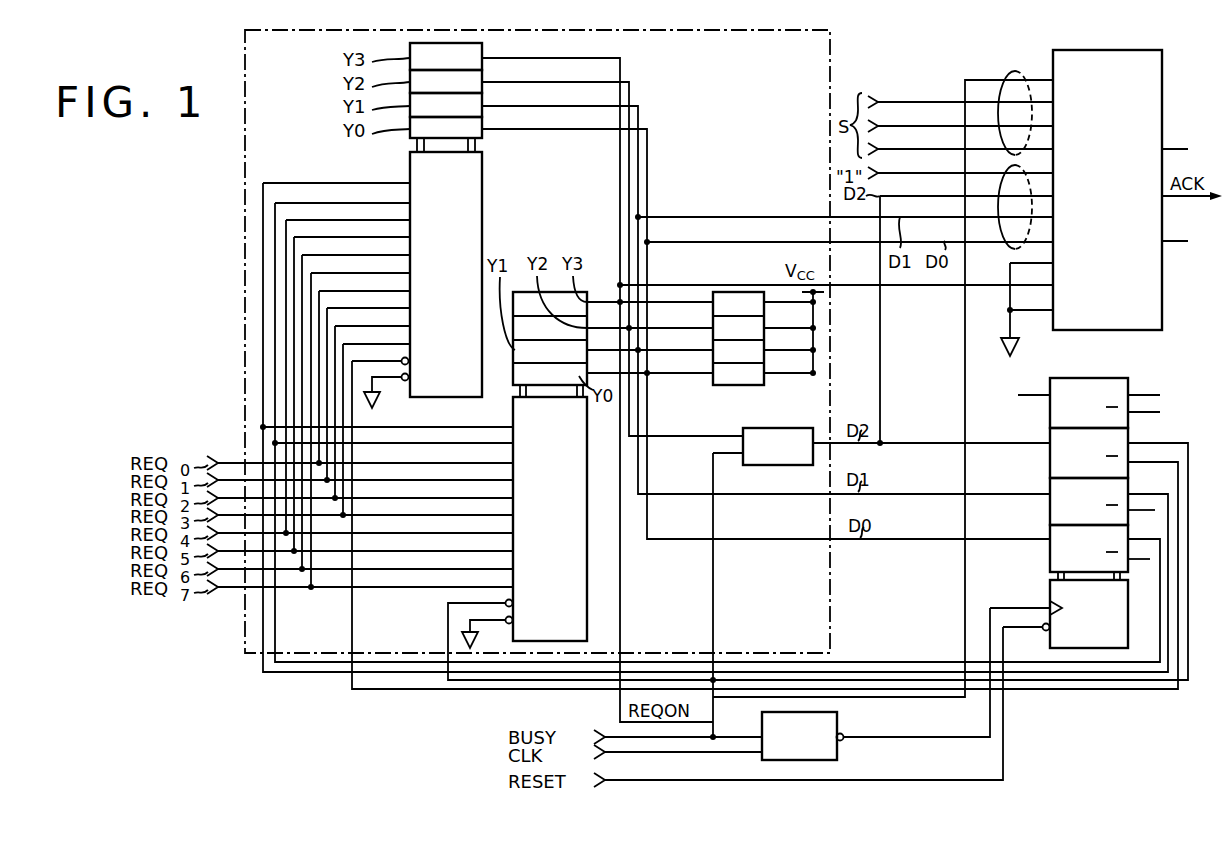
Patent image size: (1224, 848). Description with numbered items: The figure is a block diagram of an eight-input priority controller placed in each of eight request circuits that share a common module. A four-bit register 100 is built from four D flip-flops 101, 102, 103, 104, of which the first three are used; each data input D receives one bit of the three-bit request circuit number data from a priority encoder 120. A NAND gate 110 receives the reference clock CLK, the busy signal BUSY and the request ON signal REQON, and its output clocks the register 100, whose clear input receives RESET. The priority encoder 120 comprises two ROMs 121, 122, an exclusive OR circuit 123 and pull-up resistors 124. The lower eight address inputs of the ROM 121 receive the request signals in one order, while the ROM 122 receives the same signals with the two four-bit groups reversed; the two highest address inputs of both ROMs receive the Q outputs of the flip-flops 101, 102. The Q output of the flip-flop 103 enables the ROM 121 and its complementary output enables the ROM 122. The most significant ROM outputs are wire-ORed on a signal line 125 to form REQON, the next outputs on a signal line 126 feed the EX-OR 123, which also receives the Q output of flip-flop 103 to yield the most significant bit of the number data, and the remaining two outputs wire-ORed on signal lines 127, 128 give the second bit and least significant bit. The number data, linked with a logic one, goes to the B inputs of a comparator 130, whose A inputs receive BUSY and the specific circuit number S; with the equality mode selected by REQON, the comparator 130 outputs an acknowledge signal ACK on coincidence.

The 4-bit register 100 is at (1050, 592).
The D flip-flop 101 is at (1050, 560).
The D flip-flop 102 is at (1050, 513).
The D flip-flop 103 is at (1050, 465).
The D flip-flop 104 is at (1050, 415).
The NAND gate 110 is at (835, 758).
The priority encoder 120 is at (245, 653).
The ROM 121 is at (587, 608).
The ROM 122 is at (482, 190).
The exclusive OR circuit 123 is at (800, 405).
The pull-up resistors 124 is at (725, 385).
The signal line 125 is at (627, 62).
The signal line 126 is at (636, 86).
The signal line 127 is at (645, 110).
The signal line 128 is at (654, 133).
The comparator 130 is at (1150, 330).